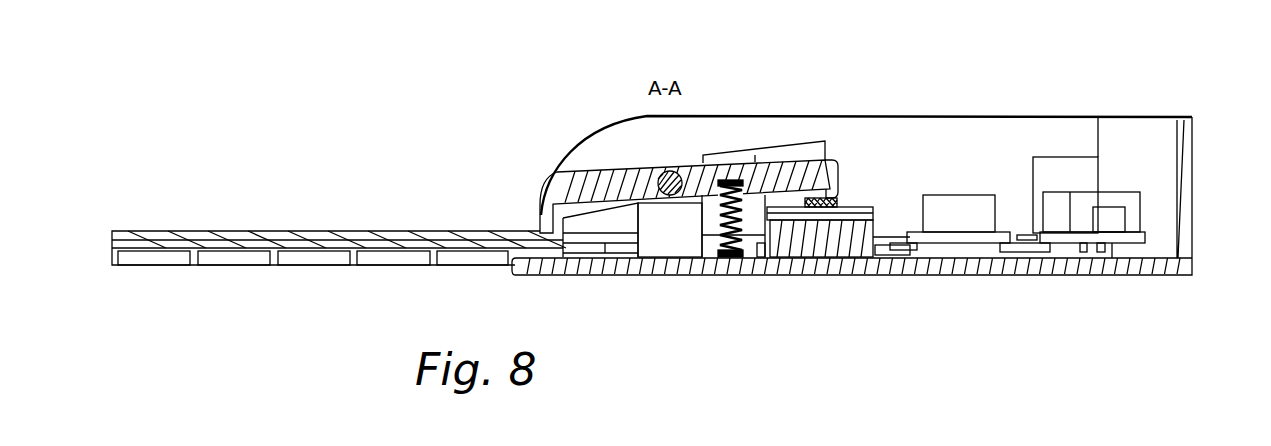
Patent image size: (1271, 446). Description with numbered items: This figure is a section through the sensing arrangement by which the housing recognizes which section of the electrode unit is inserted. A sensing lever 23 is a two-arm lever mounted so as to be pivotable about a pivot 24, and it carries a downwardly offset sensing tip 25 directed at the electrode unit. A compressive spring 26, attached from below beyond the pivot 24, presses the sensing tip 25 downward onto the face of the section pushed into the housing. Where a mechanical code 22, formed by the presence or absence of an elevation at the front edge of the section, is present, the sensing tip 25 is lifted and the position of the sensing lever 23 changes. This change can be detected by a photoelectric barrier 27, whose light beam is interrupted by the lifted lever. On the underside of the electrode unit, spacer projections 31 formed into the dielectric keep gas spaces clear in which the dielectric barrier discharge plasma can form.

The mechanical code 22 is at (540, 220).
The sensing lever 23 is at (617, 177).
The pivot 24 is at (670, 172).
The sensing tip 25 is at (537, 203).
The compressive spring 26 is at (752, 243).
The photoelectric barrier 27 is at (840, 195).
The spacer projections 31 is at (193, 265).